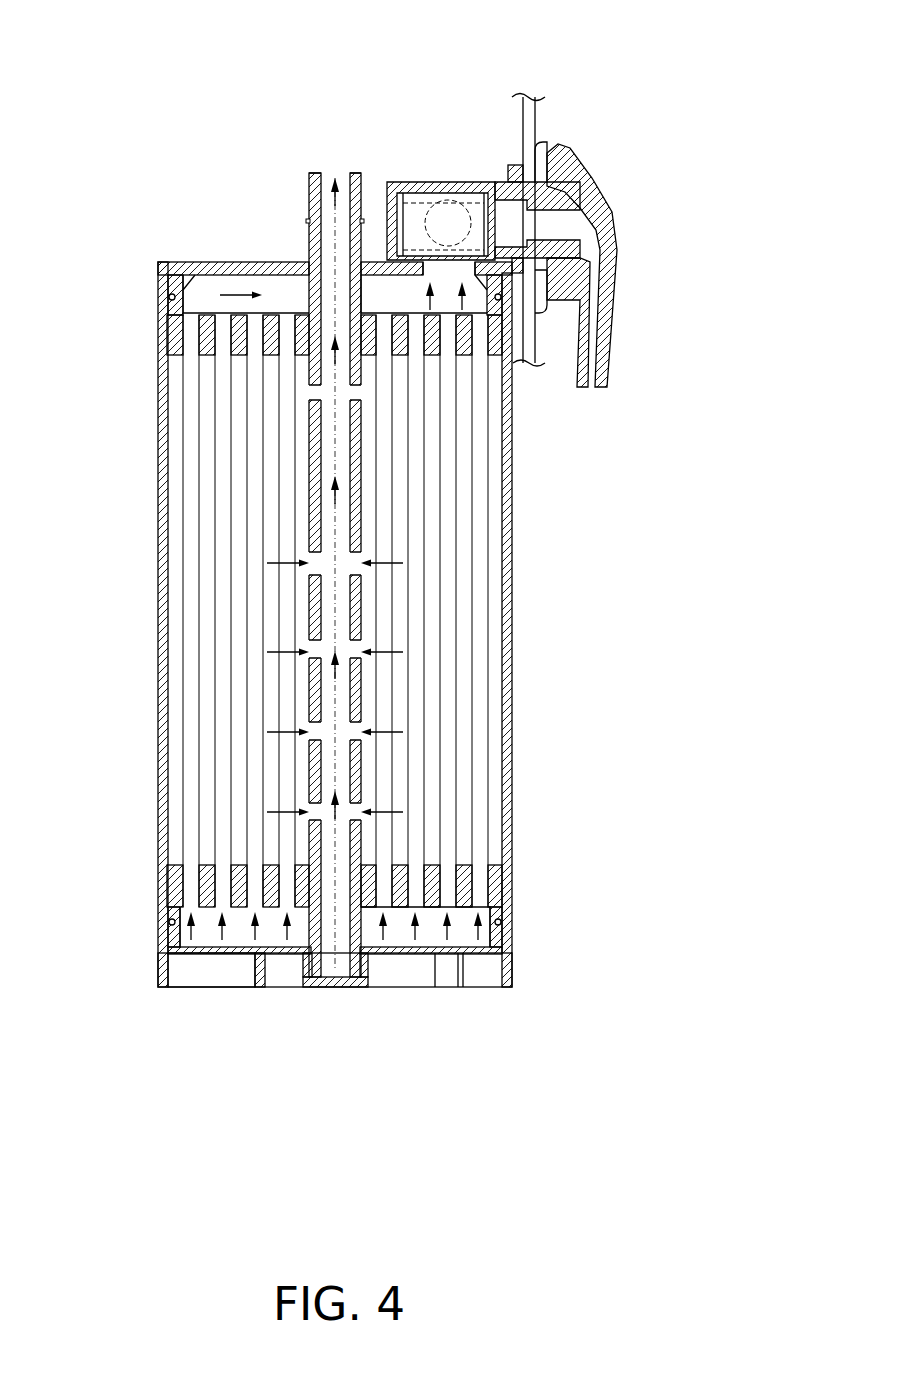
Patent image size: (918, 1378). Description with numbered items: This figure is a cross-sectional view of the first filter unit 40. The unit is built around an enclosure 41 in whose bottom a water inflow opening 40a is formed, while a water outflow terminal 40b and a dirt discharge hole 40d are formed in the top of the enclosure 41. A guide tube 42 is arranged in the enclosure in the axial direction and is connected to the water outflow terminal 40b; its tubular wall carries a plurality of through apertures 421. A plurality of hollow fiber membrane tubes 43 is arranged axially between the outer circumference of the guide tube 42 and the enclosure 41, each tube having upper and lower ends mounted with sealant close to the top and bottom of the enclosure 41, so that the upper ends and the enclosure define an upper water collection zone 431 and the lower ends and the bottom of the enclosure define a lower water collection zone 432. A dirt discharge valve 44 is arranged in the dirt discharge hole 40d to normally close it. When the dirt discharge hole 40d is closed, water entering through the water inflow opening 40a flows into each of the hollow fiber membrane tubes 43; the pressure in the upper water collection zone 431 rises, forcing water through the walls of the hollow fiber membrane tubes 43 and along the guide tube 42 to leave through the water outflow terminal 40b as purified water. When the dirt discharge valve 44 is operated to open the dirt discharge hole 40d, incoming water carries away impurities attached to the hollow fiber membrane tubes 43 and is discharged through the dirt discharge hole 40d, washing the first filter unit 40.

The first filter unit 40 is at (165, 262).
The water inflow opening 40a is at (212, 948).
The water outflow terminal 40b is at (322, 175).
The dirt discharge hole 40d is at (438, 267).
The enclosure 41 is at (165, 472).
The guide tube 42 is at (362, 453).
The through apertures 421 is at (310, 390).
The hollow fiber membrane tubes 43 is at (480, 410).
The upper water collection zone 431 is at (262, 285).
The lower water collection zone 432 is at (270, 935).
The dirt discharge valve 44 is at (475, 202).